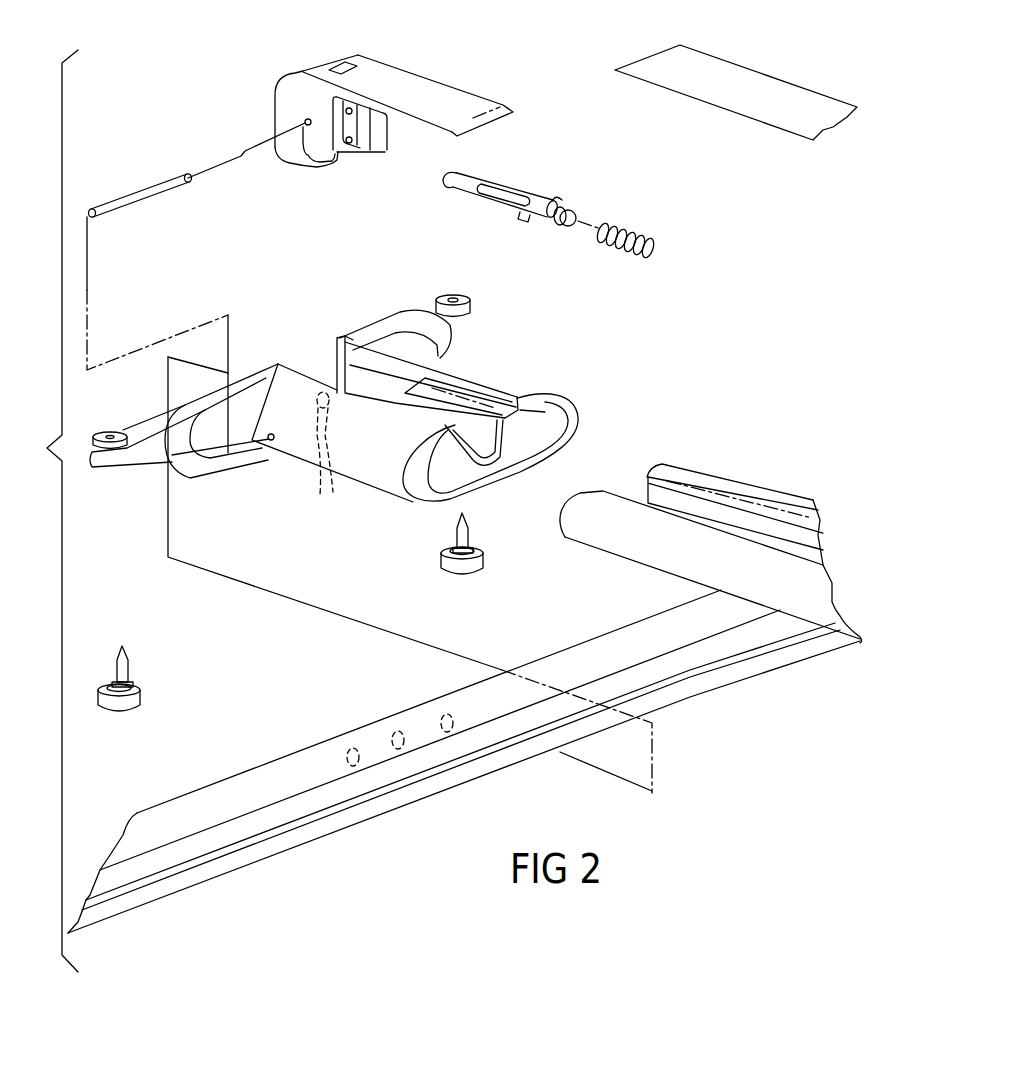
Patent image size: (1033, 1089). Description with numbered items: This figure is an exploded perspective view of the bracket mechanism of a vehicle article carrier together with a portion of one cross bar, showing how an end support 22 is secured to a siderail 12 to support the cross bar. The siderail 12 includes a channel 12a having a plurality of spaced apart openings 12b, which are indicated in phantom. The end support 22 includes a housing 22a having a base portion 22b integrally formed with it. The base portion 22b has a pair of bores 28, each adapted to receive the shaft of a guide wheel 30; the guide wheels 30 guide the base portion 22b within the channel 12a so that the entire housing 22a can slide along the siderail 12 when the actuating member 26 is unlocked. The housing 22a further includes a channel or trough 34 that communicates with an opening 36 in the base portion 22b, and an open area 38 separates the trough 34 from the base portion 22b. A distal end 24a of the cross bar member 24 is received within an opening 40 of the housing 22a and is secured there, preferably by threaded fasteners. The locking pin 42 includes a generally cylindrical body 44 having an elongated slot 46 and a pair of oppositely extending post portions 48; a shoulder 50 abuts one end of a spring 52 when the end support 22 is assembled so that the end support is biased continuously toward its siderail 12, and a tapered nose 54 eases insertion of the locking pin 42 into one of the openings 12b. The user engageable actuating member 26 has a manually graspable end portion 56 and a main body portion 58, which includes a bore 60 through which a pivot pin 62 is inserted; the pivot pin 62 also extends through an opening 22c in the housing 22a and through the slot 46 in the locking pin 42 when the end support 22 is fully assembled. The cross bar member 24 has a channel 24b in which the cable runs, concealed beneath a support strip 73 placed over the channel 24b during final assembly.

The siderail 12 is at (594, 620).
The channel 12a is at (371, 778).
The openings 12b is at (442, 710).
The end support 22 is at (344, 278).
The housing 22a is at (385, 482).
The base portion 22b is at (152, 418).
The opening 22c is at (270, 440).
The cross bar member 24 is at (721, 531).
The distal end 24a is at (710, 468).
The channel 24b is at (785, 547).
The actuating member 26 is at (384, 100).
The bores 28 is at (110, 437).
The guide wheel 30 is at (463, 574).
The channel or trough 34 is at (553, 434).
The opening 36 is at (323, 478).
The open area 38 is at (364, 380).
The opening 40 is at (473, 482).
The locking pin 42 is at (515, 196).
The cylindrical body 44 is at (478, 192).
The elongated slot 46 is at (508, 210).
The post portions 48 is at (527, 214).
The shoulder 50 is at (570, 213).
The spring 52 is at (648, 238).
The tapered nose 54 is at (447, 180).
The manually graspable end portion 56 is at (473, 98).
The main body portion 58 is at (286, 146).
The bore 60 is at (332, 172).
The pivot pin 62 is at (148, 191).
The support strip 73 is at (765, 84).